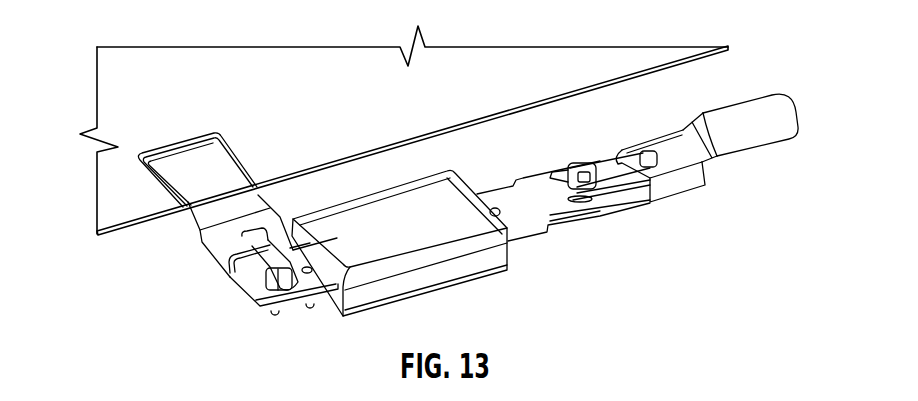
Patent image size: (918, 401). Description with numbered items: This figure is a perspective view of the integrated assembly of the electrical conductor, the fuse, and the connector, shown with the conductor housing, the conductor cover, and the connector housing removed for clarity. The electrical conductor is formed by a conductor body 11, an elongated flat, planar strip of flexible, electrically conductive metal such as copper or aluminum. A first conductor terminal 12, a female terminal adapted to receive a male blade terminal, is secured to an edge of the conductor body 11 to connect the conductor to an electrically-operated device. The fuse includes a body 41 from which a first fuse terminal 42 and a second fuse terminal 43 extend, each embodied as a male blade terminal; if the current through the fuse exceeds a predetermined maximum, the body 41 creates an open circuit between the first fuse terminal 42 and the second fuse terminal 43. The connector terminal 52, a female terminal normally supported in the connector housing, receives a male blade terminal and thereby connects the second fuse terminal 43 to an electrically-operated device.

The conductor body 11 is at (147, 62).
The first conductor terminal 12 is at (227, 223).
The body 41 is at (423, 282).
The first fuse terminal 42 is at (238, 286).
The second fuse terminal 43 is at (513, 203).
The connector terminal 52 is at (755, 122).